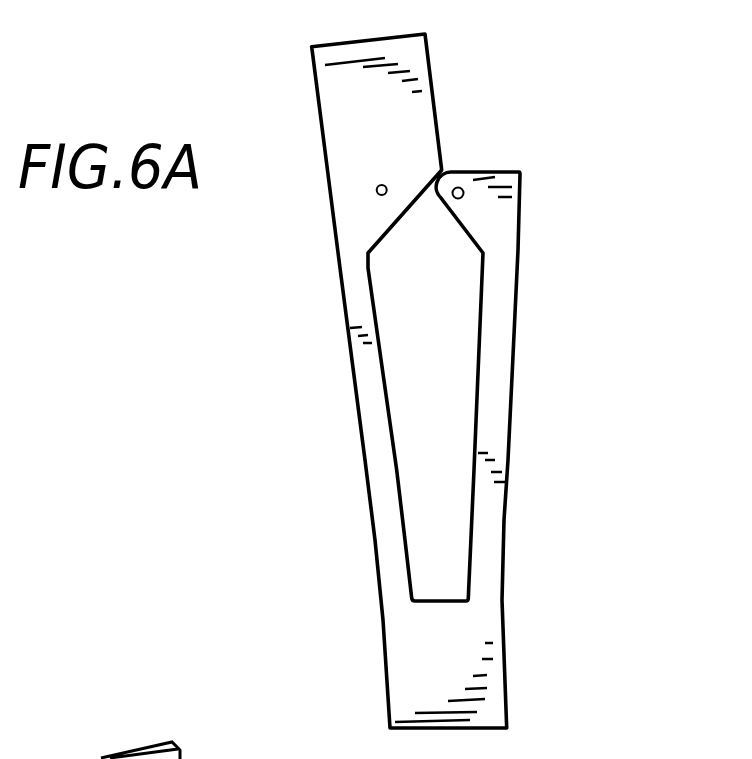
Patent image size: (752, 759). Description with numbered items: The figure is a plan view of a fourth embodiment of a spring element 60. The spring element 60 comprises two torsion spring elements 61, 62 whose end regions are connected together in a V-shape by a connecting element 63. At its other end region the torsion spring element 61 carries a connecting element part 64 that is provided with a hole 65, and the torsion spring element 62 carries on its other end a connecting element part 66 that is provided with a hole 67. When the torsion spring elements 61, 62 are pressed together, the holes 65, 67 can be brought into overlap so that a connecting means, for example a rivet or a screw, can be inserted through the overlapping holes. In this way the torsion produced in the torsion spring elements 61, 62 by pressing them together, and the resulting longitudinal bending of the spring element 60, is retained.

The spring element 60 is at (611, 363).
The torsion spring element 61 is at (494, 512).
The torsion spring element 62 is at (382, 512).
The connecting element 63 is at (412, 698).
The connecting element part 64 is at (503, 220).
The hole 65 is at (459, 188).
The connecting element part 66 is at (345, 133).
The hole 67 is at (376, 191).